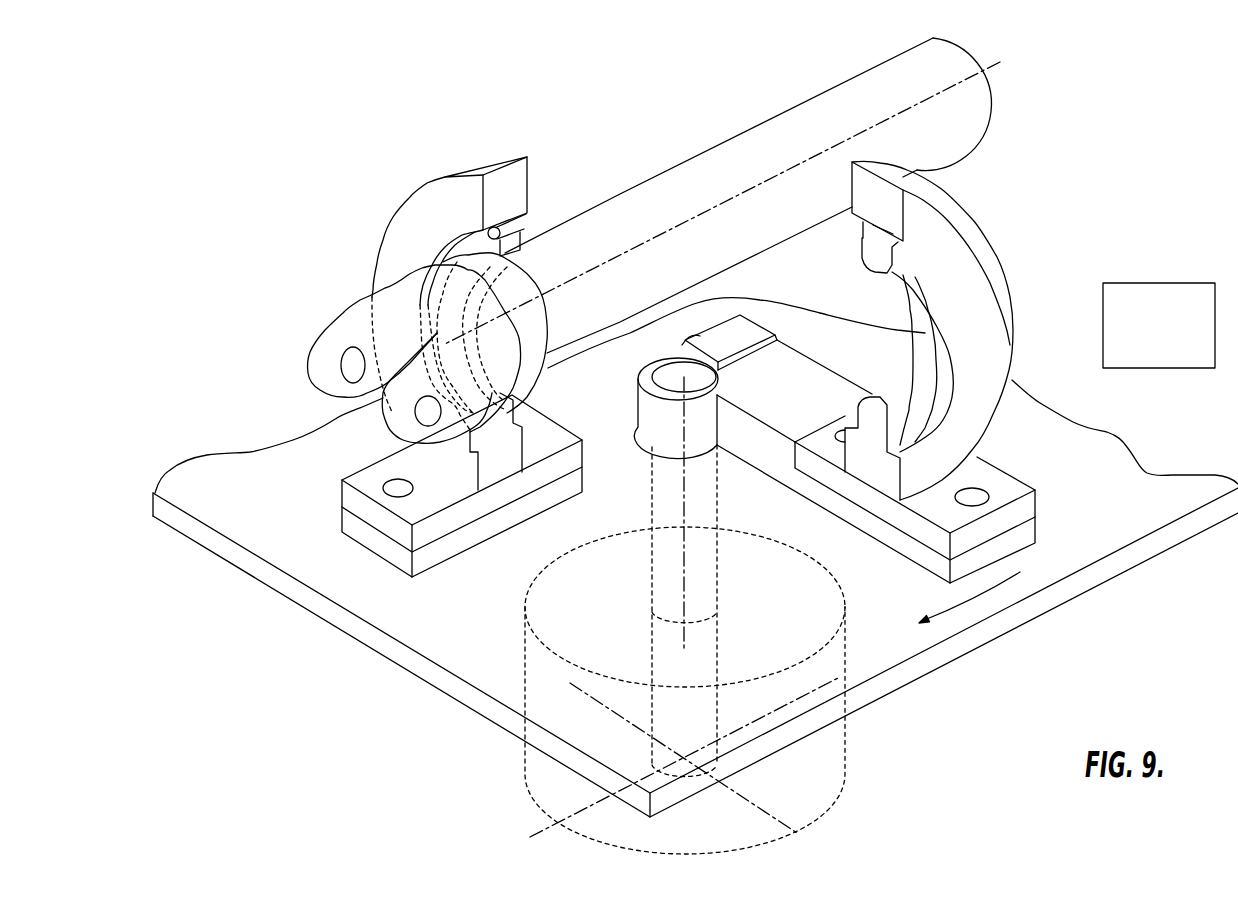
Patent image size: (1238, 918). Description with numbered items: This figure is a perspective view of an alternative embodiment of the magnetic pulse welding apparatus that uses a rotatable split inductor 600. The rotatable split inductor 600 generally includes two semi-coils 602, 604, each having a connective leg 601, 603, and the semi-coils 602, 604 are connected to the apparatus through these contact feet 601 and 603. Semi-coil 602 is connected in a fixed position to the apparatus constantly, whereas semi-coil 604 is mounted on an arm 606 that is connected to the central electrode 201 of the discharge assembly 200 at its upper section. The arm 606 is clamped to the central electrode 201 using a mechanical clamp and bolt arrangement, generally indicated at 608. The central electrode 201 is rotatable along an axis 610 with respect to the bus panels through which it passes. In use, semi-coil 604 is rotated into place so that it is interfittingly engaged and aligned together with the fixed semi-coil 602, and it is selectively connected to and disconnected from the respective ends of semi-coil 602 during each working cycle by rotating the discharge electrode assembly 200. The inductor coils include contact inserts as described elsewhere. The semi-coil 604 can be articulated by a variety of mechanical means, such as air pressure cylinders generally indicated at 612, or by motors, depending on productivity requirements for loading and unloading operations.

The rotatable split inductor 600 is at (476, 632).
The connective leg 601 is at (378, 515).
The semi-coil 602 is at (424, 213).
The connective leg 603 is at (1013, 490).
The semi-coil 604 is at (980, 260).
The arm 606 is at (770, 457).
The mechanical clamp and bolt arrangement 608 is at (738, 328).
The axis 610 is at (685, 593).
The central electrode 201 is at (685, 652).
The discharge assembly 200 is at (860, 756).
The air pressure cylinders 612 is at (1179, 341).